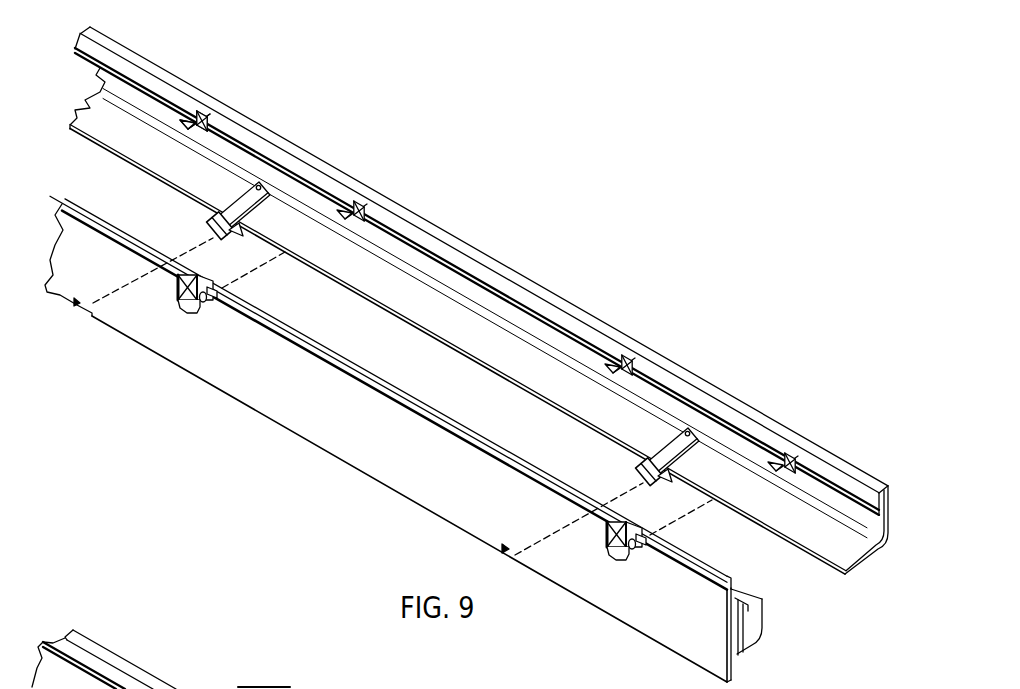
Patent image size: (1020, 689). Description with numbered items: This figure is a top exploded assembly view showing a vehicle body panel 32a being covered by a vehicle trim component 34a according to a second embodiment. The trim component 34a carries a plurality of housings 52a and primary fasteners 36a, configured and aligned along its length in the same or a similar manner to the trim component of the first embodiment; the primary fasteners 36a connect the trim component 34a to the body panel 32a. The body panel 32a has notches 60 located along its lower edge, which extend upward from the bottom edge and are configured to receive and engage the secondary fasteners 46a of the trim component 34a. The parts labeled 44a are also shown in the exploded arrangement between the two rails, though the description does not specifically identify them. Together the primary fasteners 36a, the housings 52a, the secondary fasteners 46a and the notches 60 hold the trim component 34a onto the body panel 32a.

The body panel 32a is at (250, 410).
The vehicle trim component 34a is at (836, 440).
The primary fasteners 36a is at (180, 120).
The connector clip 44a is at (200, 305).
The secondary fasteners 46a is at (211, 220).
The housings 52a is at (207, 100).
The notches 60 is at (78, 306).